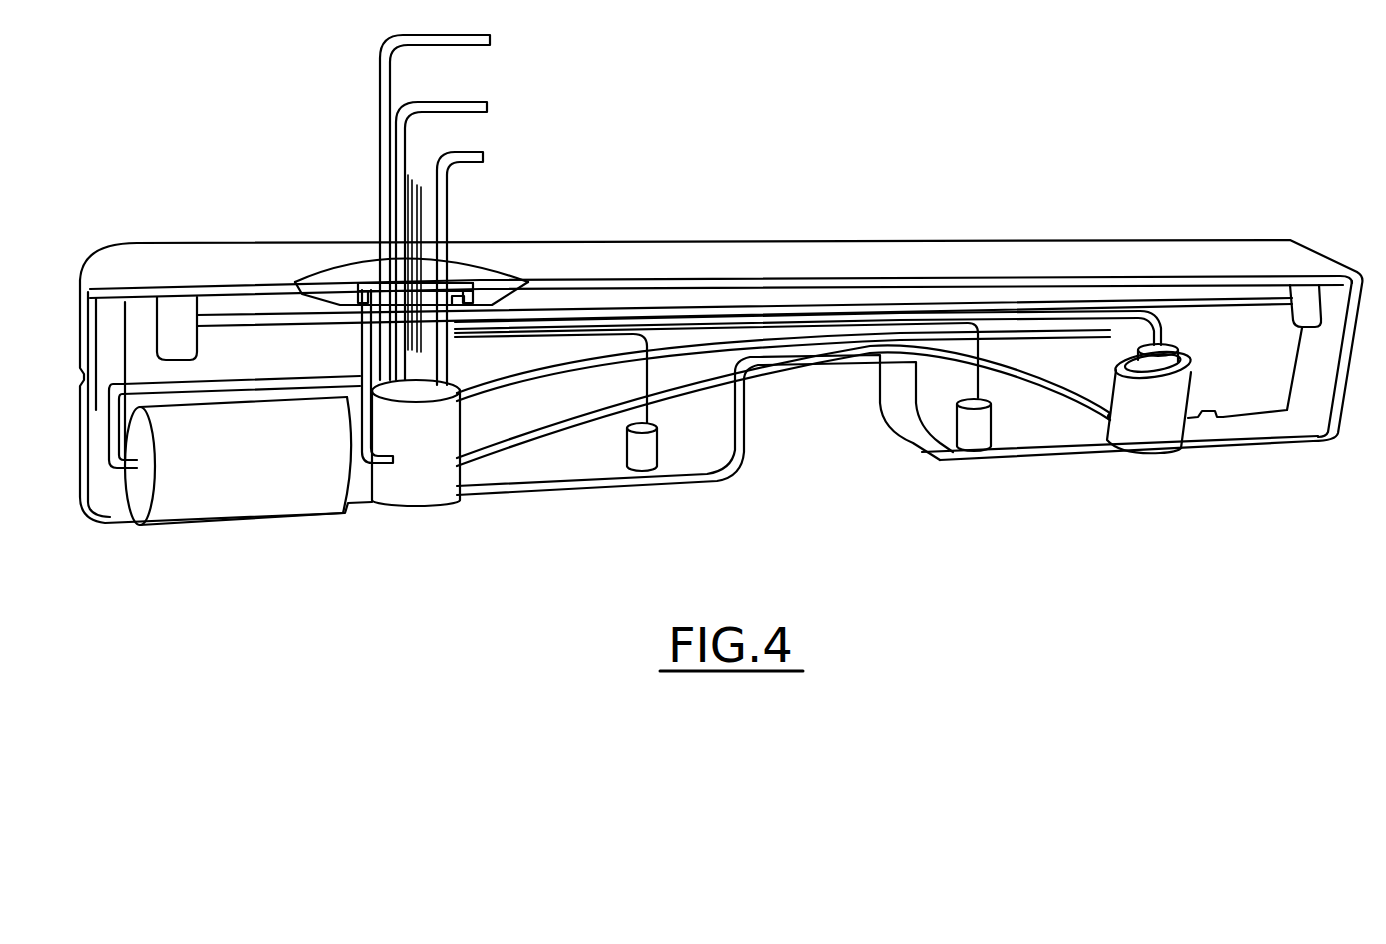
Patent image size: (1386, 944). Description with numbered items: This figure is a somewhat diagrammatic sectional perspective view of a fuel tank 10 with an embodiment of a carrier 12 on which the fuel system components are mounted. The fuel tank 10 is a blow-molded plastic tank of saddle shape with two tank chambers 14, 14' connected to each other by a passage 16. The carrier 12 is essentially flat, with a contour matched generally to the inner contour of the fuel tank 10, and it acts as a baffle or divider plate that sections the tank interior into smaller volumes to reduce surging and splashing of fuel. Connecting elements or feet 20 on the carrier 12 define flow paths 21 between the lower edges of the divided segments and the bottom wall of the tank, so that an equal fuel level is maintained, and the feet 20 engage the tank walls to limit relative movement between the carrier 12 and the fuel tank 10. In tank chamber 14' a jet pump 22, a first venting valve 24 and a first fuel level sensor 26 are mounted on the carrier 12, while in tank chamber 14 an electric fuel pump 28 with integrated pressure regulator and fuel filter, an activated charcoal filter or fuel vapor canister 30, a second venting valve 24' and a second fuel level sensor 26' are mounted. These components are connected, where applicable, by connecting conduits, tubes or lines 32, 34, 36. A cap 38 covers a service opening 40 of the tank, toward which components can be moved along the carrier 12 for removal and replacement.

The fuel tank 10 is at (1100, 257).
The carrier 12 is at (1260, 358).
The tank chamber 14 is at (610, 455).
The tank chamber 14' is at (1120, 488).
The passage 16 is at (814, 365).
The feet 20 is at (1216, 430).
The flow paths 21 is at (1184, 435).
The jet pump 22 is at (1148, 425).
The first venting valve 24 is at (1310, 243).
The second venting valve 24' is at (168, 254).
The first fuel level sensor 26 is at (723, 431).
The second fuel level sensor 26' is at (566, 456).
The electric fuel pump 28 is at (423, 472).
The fuel vapor canister 30 is at (248, 473).
The connecting line 32 is at (1207, 300).
The connecting line 34 is at (1033, 318).
The connecting line 36 is at (940, 340).
The cap 38 is at (453, 274).
The service opening 40 is at (453, 297).